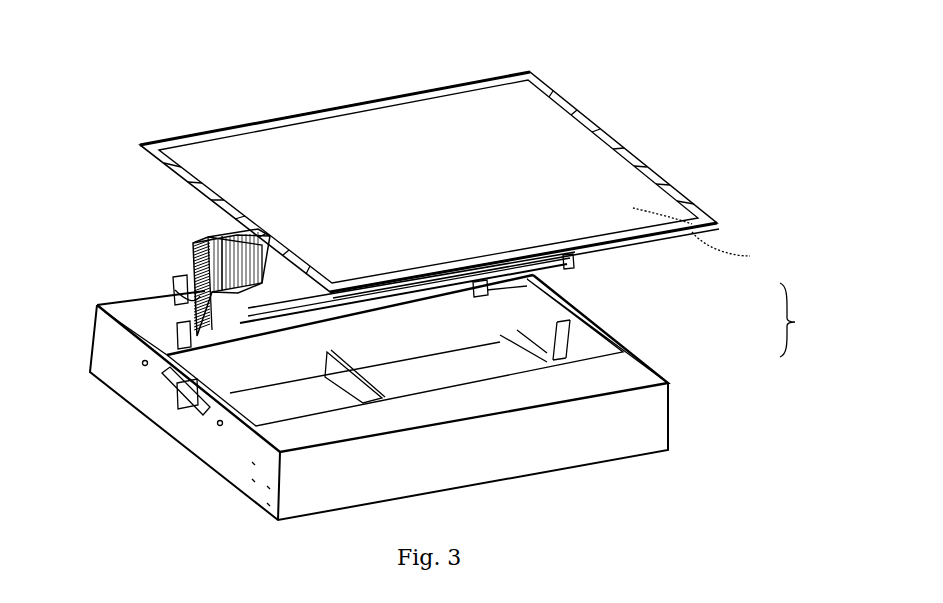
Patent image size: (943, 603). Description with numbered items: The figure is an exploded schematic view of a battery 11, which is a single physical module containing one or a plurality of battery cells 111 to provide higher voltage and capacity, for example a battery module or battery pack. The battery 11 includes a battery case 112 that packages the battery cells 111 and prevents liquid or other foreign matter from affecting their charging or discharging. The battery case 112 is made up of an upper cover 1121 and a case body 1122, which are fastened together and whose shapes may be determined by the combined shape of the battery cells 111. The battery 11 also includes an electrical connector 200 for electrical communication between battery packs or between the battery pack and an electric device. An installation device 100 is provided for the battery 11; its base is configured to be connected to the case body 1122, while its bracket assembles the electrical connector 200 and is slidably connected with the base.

The battery 11 is at (613, 80).
The battery cell 111 is at (200, 232).
The installation device 100 is at (182, 327).
The electrical connector 200 is at (182, 299).
The battery case 112 is at (463, 397).
The upper cover 1121 is at (787, 300).
The case body 1122 is at (640, 424).